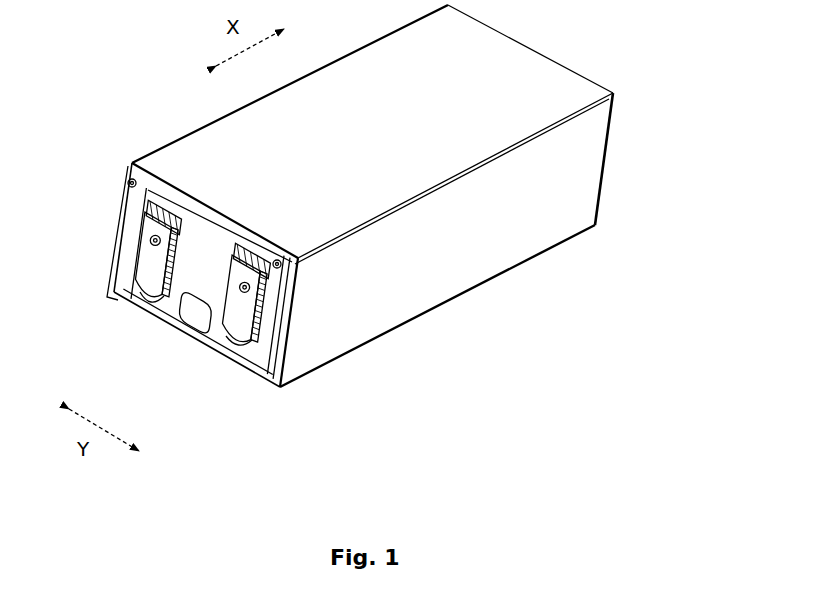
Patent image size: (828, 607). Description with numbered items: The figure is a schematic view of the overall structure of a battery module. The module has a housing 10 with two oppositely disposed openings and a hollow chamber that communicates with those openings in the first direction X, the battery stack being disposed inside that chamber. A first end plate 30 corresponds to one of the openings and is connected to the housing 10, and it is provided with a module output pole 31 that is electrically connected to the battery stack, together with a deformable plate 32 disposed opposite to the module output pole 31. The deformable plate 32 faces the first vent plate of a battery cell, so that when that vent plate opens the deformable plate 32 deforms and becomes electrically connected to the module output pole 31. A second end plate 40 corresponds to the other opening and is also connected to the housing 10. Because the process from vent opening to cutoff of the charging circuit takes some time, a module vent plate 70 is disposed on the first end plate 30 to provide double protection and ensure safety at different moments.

The housing 10 is at (437, 287).
The first end plate 30 is at (133, 162).
The module output pole 31 is at (133, 251).
The deformable plate 32 is at (133, 302).
The second end plate 40 is at (616, 124).
The module vent plate 70 is at (172, 323).